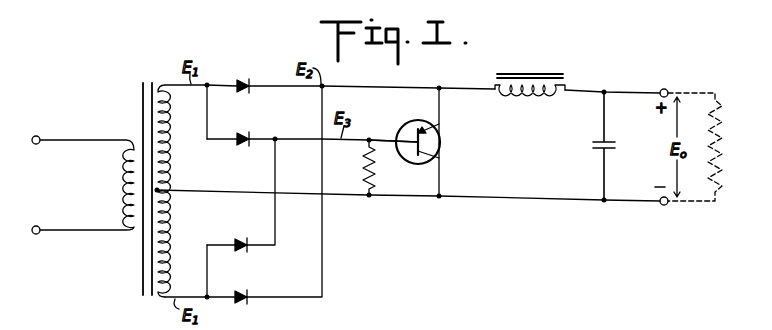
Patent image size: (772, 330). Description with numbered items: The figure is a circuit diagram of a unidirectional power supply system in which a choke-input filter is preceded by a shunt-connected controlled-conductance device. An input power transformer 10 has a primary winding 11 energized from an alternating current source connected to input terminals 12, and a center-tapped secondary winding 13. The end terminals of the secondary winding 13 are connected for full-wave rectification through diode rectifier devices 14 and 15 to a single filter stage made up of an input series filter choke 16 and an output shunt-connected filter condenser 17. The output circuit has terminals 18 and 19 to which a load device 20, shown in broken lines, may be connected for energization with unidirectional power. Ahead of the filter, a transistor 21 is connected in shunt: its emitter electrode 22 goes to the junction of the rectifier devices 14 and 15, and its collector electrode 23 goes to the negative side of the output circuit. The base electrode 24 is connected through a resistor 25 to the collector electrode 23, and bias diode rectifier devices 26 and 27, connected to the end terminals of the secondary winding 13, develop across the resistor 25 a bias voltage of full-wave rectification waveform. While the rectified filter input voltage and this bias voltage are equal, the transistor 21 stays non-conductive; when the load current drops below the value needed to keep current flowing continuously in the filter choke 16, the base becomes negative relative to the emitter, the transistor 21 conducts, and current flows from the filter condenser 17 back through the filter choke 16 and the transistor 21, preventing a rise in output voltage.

The input power transformer 10 is at (148, 68).
The primary winding 11 is at (125, 184).
The input terminals 12 is at (36, 225).
The center-tapped secondary winding 13 is at (167, 110).
The diode rectifier device 14 is at (240, 79).
The diode rectifier device 15 is at (239, 301).
The input series filter choke 16 is at (529, 98).
The output shunt-connected filter condenser 17 is at (592, 144).
The output terminal 18 is at (667, 89).
The output terminal 19 is at (661, 205).
The load device 20 is at (722, 132).
The transistor 21 is at (442, 142).
The emitter electrode 22 is at (433, 130).
The collector electrode 23 is at (425, 150).
The base electrode 24 is at (410, 122).
The resistor 25 is at (368, 176).
The bias diode rectifier device 26 is at (240, 149).
The bias diode rectifier device 27 is at (240, 239).